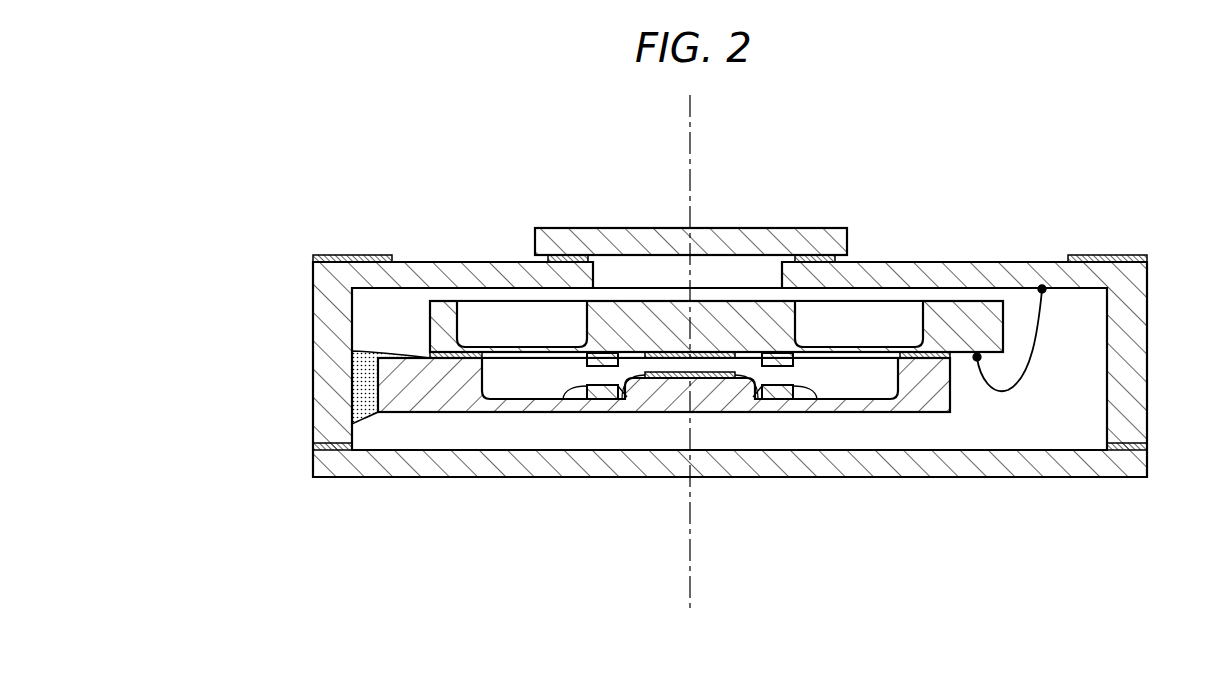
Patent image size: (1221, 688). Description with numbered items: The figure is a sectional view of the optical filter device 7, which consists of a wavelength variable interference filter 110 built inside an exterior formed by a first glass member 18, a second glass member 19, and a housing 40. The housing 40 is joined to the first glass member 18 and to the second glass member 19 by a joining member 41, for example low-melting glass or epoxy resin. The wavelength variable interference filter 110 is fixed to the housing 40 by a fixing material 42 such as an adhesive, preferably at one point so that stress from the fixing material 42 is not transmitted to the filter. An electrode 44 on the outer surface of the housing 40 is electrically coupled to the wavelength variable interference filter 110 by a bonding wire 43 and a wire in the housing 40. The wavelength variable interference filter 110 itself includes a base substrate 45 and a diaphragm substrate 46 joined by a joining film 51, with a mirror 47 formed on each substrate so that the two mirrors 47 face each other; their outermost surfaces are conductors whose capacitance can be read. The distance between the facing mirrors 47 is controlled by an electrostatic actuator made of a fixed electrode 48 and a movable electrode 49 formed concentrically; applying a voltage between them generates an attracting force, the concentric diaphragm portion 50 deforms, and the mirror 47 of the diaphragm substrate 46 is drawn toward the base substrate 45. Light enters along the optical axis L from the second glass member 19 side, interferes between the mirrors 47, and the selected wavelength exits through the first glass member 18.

The optical filter device 7 is at (1116, 189).
The first glass member 18 is at (538, 240).
The second glass member 19 is at (313, 456).
The housing 40 is at (322, 343).
The joining member 41 is at (546, 258).
The fixing material 42 is at (362, 380).
The bonding wire 43 is at (1030, 352).
The electrode 44 is at (313, 256).
The base substrate 45 is at (446, 406).
The diaphragm substrate 46 is at (760, 304).
The mirror 47 is at (628, 380).
The fixed electrode 48 is at (568, 396).
The movable electrode 49 is at (812, 368).
The diaphragm portion 50 is at (877, 350).
The joining film 51 is at (428, 352).
The wavelength variable interference filter 110 is at (957, 418).
The optical axis L is at (692, 591).